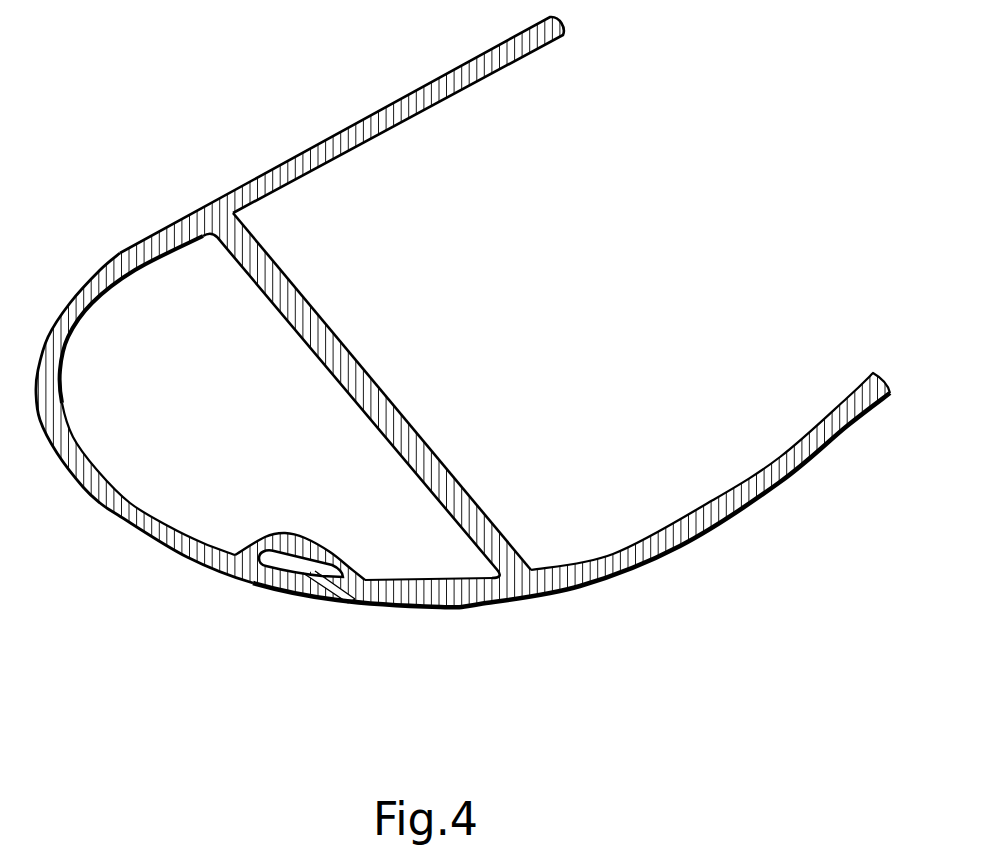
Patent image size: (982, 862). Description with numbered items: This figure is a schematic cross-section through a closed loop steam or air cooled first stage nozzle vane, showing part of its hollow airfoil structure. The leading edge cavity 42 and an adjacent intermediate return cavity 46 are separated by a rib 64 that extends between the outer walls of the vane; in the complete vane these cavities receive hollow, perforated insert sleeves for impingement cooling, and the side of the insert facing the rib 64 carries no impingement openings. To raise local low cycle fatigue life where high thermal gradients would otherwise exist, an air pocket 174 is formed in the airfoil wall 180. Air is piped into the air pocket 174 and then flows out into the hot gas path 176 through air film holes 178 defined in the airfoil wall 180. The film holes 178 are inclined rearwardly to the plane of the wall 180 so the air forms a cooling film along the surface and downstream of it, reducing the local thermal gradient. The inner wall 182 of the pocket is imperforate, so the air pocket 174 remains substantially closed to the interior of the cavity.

The leading edge cavity 42 is at (168, 307).
The intermediate return cavity 46 is at (400, 182).
The rib 64 is at (338, 354).
The air pocket 174 is at (300, 557).
The hot gas path 176 is at (511, 687).
The air film holes 178 is at (364, 622).
The airfoil wall 180 is at (320, 601).
The inner wall 182 is at (343, 565).